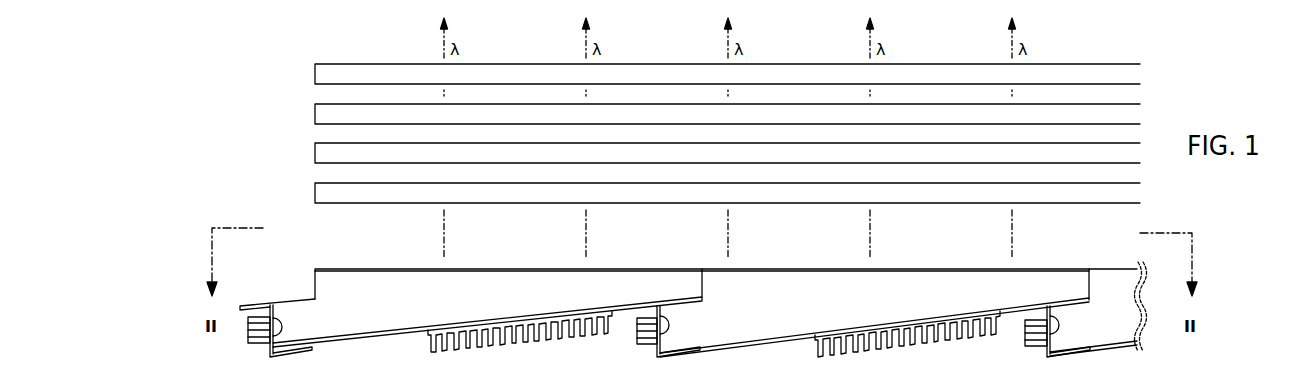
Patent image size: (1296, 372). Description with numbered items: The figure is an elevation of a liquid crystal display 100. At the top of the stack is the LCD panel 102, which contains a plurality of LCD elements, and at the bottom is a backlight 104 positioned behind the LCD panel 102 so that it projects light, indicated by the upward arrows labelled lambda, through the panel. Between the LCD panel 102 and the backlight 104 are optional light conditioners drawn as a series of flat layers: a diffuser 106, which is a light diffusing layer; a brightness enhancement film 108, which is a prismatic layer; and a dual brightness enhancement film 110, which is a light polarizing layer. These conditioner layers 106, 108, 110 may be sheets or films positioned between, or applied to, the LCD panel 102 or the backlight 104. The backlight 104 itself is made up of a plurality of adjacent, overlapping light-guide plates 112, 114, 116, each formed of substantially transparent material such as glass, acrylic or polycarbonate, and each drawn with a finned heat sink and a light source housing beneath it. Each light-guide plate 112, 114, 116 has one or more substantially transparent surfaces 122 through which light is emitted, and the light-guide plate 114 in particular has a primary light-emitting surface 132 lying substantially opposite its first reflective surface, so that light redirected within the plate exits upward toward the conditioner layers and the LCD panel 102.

The liquid crystal display 100 is at (248, 207).
The LCD panel 102 is at (315, 78).
The backlight 104 is at (313, 282).
The diffuser 106 is at (315, 195).
The brightness enhancement film 108 is at (315, 157).
The dual brightness enhancement film 110 is at (315, 118).
The light-guide plate 112 is at (393, 305).
The light-guide plate 114 is at (781, 306).
The light-guide plate 116 is at (1130, 308).
The substantially transparent surface 122 is at (483, 269).
The primary light-emitting surface 132 is at (792, 270).